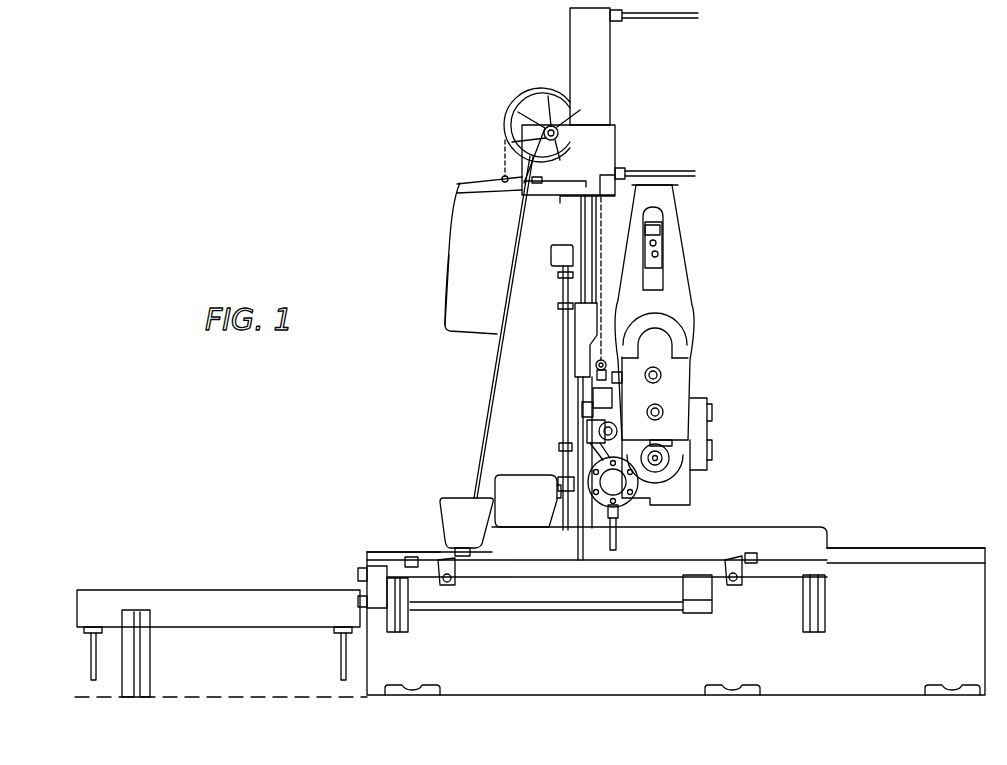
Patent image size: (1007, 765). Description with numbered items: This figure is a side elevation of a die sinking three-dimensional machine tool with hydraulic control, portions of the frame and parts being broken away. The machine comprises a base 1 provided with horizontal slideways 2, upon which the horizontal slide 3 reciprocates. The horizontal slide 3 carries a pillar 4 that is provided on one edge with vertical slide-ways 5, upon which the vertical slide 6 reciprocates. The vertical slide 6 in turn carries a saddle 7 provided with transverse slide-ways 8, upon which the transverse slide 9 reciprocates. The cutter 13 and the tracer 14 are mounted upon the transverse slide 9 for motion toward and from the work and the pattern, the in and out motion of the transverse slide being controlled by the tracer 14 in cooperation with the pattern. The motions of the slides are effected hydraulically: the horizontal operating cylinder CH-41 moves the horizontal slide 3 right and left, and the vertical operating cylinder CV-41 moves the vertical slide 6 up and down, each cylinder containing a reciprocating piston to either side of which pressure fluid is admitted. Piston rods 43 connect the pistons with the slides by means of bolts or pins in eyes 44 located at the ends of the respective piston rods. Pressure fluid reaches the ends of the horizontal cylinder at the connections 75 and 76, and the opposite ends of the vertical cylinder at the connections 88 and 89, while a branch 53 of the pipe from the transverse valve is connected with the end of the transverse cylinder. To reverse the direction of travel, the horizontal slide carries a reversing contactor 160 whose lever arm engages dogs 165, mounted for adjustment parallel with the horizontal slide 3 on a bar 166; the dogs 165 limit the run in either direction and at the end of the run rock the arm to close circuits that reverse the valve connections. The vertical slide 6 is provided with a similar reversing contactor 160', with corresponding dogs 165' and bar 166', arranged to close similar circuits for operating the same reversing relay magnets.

The base 1 is at (676, 621).
The horizontal slideways 2 is at (918, 545).
The horizontal slide 3 is at (400, 538).
The pillar 4 is at (515, 337).
The vertical slide-ways 5 is at (582, 224).
The vertical slide 6 is at (587, 342).
The saddle 7 is at (700, 520).
The transverse slide-ways 8 is at (652, 500).
The transverse slide 9 is at (700, 420).
The cutter 13 is at (663, 408).
The tracer 14 is at (660, 245).
The piston rods 43 is at (510, 600).
The eyes 44 is at (587, 315).
The branch of pipe 53 is at (613, 540).
The connection 75 is at (343, 656).
The connection 76 is at (88, 656).
The connection 88 is at (680, 172).
The connection 89 is at (682, 16).
The reversing contactor 160 is at (396, 521).
The reversing contactor 160' is at (455, 487).
The dogs 165 is at (331, 585).
The dogs 165' is at (498, 387).
The bar 166 is at (561, 613).
The bar 166' is at (514, 328).
The horizontal operating cylinder CH-41 is at (170, 600).
The vertical operating cylinder CV-41 is at (578, 58).